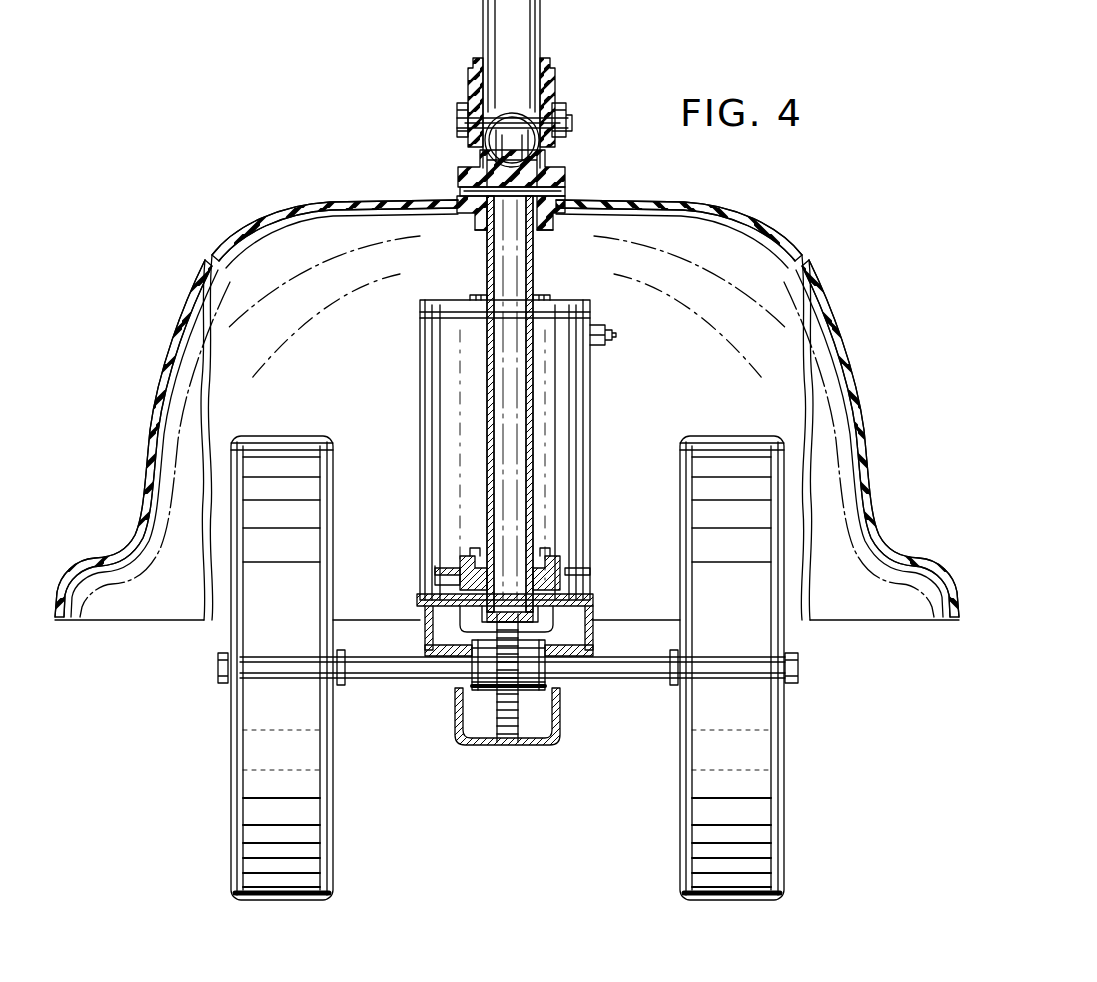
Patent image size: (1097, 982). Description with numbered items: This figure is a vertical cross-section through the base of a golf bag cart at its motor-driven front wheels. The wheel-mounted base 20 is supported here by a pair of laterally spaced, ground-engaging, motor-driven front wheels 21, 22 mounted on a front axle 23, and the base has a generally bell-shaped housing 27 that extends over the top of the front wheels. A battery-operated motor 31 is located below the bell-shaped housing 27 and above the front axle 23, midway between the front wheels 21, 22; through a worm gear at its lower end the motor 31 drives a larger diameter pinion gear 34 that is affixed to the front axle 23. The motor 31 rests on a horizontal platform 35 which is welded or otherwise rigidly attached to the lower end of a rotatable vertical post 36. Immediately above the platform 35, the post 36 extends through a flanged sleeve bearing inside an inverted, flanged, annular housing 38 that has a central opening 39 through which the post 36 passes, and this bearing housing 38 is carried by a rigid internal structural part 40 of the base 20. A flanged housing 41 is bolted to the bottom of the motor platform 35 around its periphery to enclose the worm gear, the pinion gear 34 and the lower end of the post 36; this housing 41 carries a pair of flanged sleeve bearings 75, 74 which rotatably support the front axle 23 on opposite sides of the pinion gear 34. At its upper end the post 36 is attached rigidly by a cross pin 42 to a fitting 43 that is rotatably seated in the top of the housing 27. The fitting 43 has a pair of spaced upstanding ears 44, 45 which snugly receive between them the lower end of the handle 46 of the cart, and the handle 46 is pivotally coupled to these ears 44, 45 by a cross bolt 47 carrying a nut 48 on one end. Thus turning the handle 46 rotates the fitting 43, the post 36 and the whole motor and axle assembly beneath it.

The wheel-mounted base 20 is at (306, 127).
The front wheel 21 is at (230, 845).
The front wheel 22 is at (784, 858).
The front axle 23 is at (638, 678).
The bell-shaped housing 27 is at (300, 213).
The motor 31 is at (590, 430).
The pinion gear 34 is at (500, 700).
The horizontal platform 35 is at (593, 600).
The rotatable vertical post 36 is at (535, 277).
The annular housing 38 is at (483, 556).
The central opening 39 is at (538, 556).
The internal structural part 40 is at (442, 566).
The flanged housing 41 is at (560, 735).
The cross pin 42 is at (555, 182).
The fitting 43 is at (545, 230).
The upstanding ear 44 is at (478, 102).
The upstanding ear 45 is at (547, 100).
The handle 46 is at (530, 33).
The cross bolt 47 is at (457, 122).
The nut 48 is at (574, 108).
The flanged sleeve bearing 74 is at (440, 690).
The flanged sleeve bearing 75 is at (593, 648).